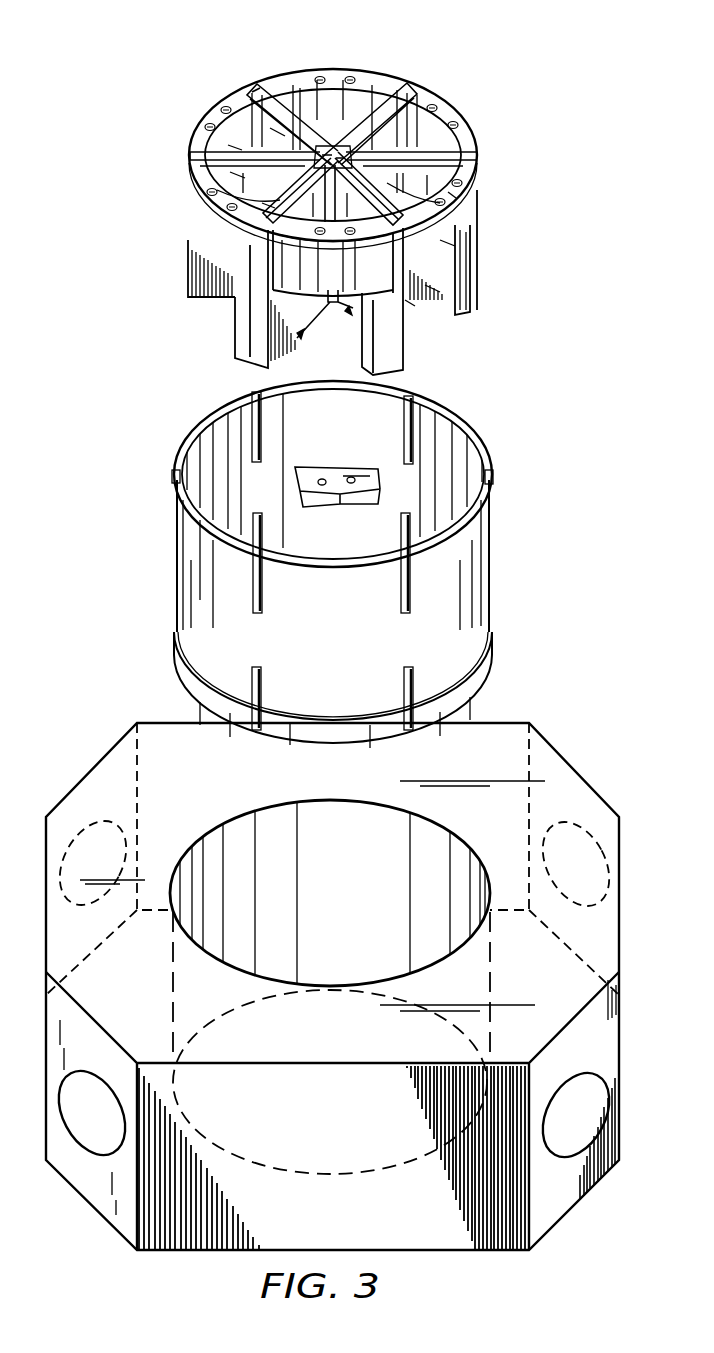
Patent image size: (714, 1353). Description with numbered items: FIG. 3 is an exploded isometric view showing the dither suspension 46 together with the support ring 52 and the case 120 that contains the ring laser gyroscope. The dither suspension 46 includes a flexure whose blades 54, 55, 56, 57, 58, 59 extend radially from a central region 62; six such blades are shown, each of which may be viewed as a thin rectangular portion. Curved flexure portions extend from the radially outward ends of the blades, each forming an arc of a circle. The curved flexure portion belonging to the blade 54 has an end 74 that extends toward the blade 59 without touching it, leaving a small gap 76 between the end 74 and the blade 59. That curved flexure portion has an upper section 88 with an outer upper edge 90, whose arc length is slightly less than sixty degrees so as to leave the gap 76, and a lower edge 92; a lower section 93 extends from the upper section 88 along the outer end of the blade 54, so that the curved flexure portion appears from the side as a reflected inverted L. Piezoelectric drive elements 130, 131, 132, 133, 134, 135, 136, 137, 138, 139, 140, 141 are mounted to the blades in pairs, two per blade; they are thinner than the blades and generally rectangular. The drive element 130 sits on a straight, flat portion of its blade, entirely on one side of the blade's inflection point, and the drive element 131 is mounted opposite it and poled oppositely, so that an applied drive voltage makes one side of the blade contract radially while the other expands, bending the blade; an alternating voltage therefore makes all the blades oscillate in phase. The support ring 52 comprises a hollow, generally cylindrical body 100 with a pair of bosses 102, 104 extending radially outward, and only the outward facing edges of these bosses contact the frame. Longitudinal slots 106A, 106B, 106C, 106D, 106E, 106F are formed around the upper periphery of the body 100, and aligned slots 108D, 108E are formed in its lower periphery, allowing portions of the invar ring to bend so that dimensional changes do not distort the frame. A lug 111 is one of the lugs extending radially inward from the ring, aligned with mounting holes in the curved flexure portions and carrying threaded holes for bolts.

The dither suspension 46 is at (334, 568).
The support ring 52 is at (490, 530).
The blade 54 is at (455, 150).
The blade 55 is at (382, 92).
The blade 56 is at (262, 86).
The blade 57 is at (200, 177).
The blade 58 is at (278, 240).
The blade 59 is at (450, 246).
The central region 62 is at (417, 125).
The end 74 is at (453, 292).
The gap 76 is at (414, 308).
The upper section 88 is at (440, 236).
The outer upper edge 90 is at (443, 222).
The lower edge 92 is at (430, 289).
The lower section 93 is at (476, 274).
The cylindrical body 100 is at (489, 605).
The boss 102 is at (455, 548).
The boss 104 is at (483, 689).
The longitudinal slot 106A is at (493, 478).
The longitudinal slot 106B is at (416, 403).
The longitudinal slot 106C is at (253, 394).
The longitudinal slot 106D is at (253, 573).
The longitudinal slot 106E is at (405, 575).
The longitudinal slot 106F is at (173, 478).
The slot 108D is at (253, 733).
The slot 108E is at (408, 731).
The lug 111 is at (338, 500).
The case 120 is at (617, 855).
The piezoelectric drive element 130 is at (430, 176).
The piezoelectric drive element 131 is at (445, 155).
The piezoelectric drive element 132 is at (412, 100).
The piezoelectric drive element 133 is at (360, 96).
The piezoelectric drive element 134 is at (306, 93).
The piezoelectric drive element 135 is at (278, 133).
The piezoelectric drive element 136 is at (235, 148).
The piezoelectric drive element 137 is at (235, 176).
The piezoelectric drive element 138 is at (268, 206).
The piezoelectric drive element 139 is at (299, 338).
The piezoelectric drive element 140 is at (348, 316).
The piezoelectric drive element 141 is at (450, 195).